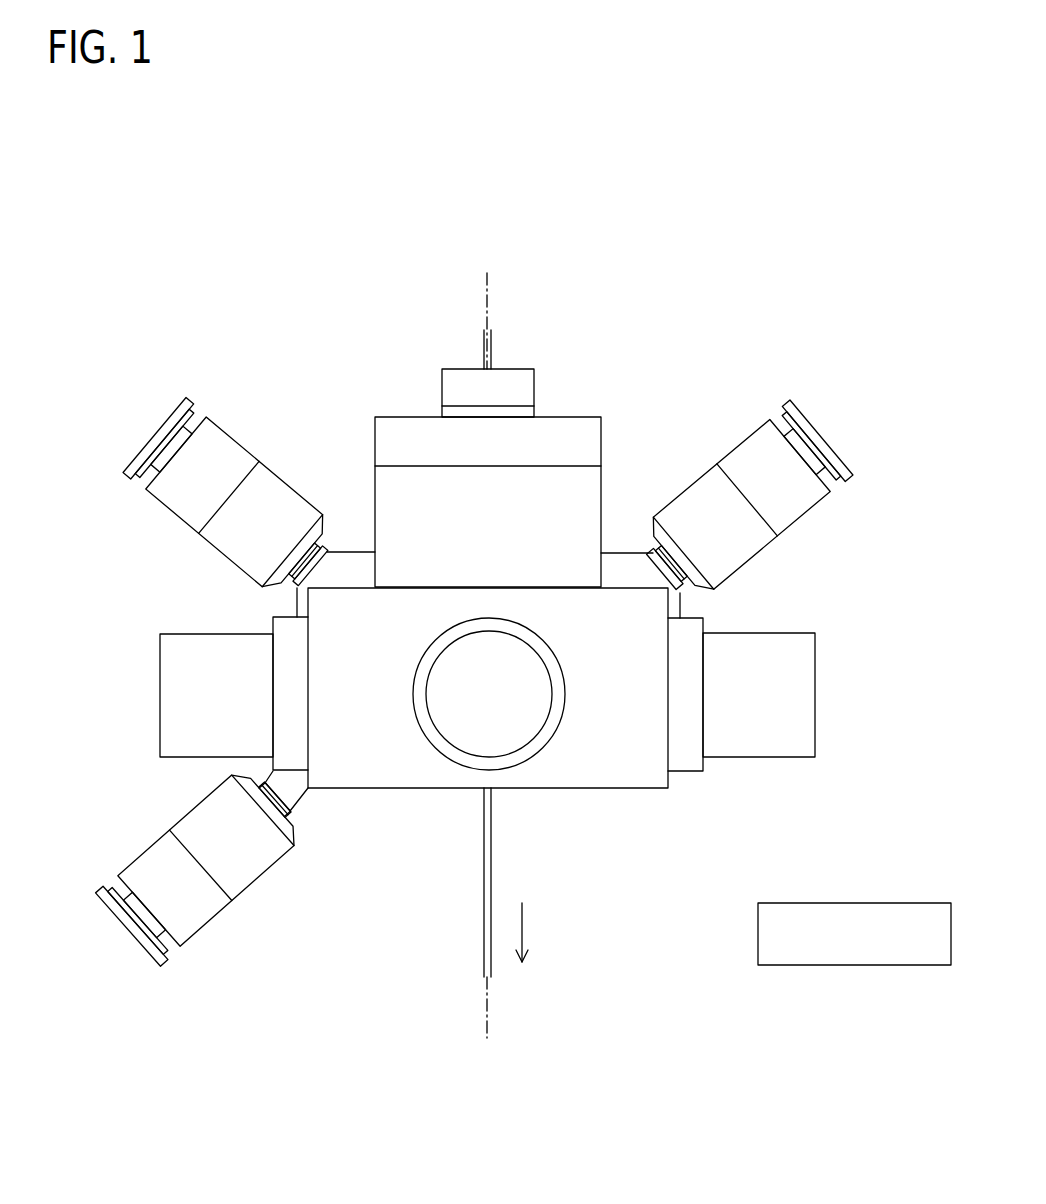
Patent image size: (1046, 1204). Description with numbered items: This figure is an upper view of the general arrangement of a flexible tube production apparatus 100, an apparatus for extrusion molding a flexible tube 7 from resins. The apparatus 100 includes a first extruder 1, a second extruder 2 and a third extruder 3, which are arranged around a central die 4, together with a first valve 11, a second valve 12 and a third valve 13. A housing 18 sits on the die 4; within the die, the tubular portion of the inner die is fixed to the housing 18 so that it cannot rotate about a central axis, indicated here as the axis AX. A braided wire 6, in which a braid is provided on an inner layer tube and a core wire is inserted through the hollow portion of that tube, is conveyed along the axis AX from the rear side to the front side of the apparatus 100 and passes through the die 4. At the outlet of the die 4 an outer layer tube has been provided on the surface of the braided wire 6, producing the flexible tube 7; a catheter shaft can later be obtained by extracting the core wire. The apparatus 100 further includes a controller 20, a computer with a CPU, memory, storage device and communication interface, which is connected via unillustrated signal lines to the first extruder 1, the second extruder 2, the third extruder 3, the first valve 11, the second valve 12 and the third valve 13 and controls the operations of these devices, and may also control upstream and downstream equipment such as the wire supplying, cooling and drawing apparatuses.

The flexible tube production apparatus 100 is at (162, 273).
The axis AX is at (488, 282).
The braided wire 6 is at (492, 345).
The housing 18 is at (601, 423).
The die 4 is at (625, 787).
The third valve 13 is at (460, 766).
The flexible tube 7 is at (490, 872).
The first valve 11 is at (160, 668).
The second valve 12 is at (817, 669).
The first extruder 1 is at (150, 422).
The second extruder 2 is at (748, 432).
The third extruder 3 is at (95, 887).
The controller 20 is at (913, 902).